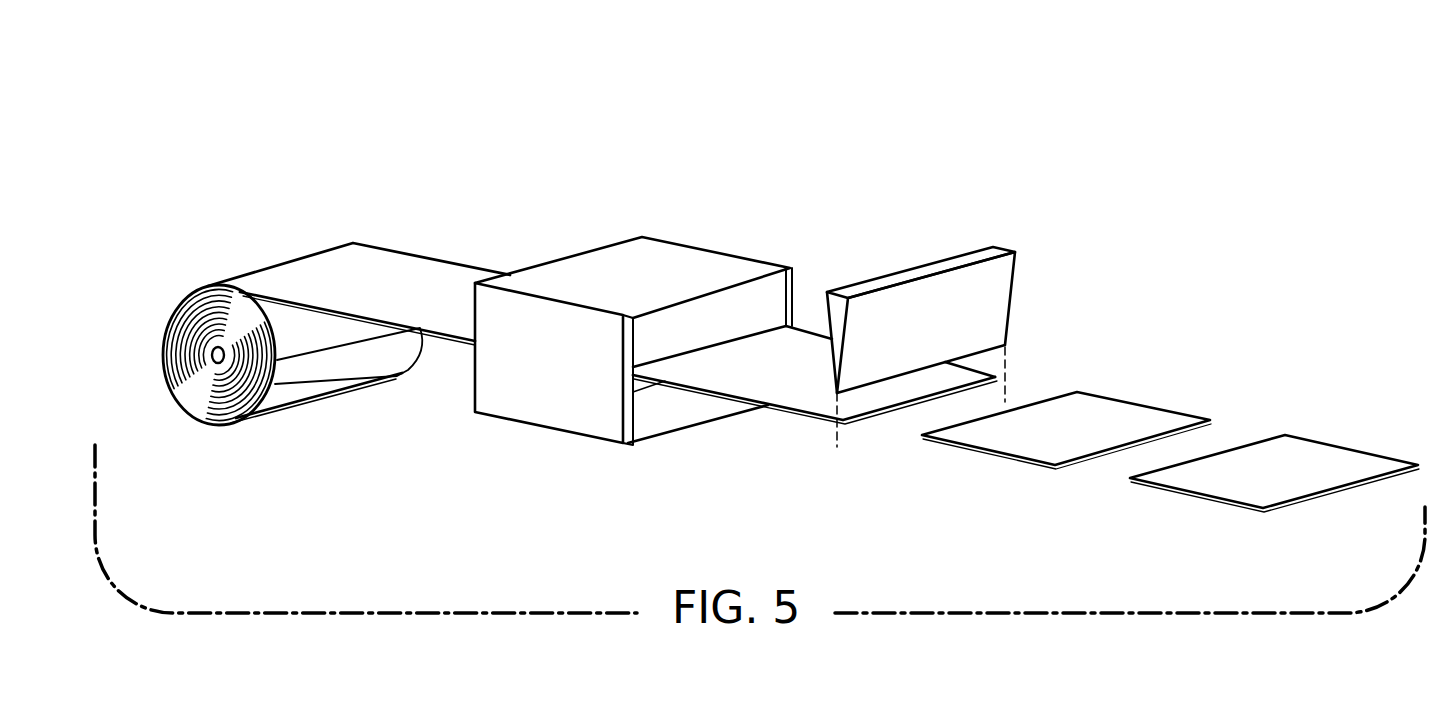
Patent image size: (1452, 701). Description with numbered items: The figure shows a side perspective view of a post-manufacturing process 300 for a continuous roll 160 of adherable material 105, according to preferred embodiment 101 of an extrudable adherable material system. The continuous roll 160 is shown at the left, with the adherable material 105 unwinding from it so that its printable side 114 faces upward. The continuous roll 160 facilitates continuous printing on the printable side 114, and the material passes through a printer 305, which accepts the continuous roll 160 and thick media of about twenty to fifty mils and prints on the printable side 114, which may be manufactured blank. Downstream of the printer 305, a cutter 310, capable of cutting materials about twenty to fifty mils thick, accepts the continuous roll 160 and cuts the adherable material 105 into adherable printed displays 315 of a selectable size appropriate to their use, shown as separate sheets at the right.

The preferred embodiment 101 is at (296, 99).
The post-manufacturing process 300 is at (440, 132).
The adherable material 105 is at (335, 215).
The printable side 114 is at (437, 263).
The continuous roll 160 is at (192, 392).
The printer 305 is at (698, 256).
The cutter 310 is at (1005, 292).
The adherable printed display 315 is at (1133, 415).